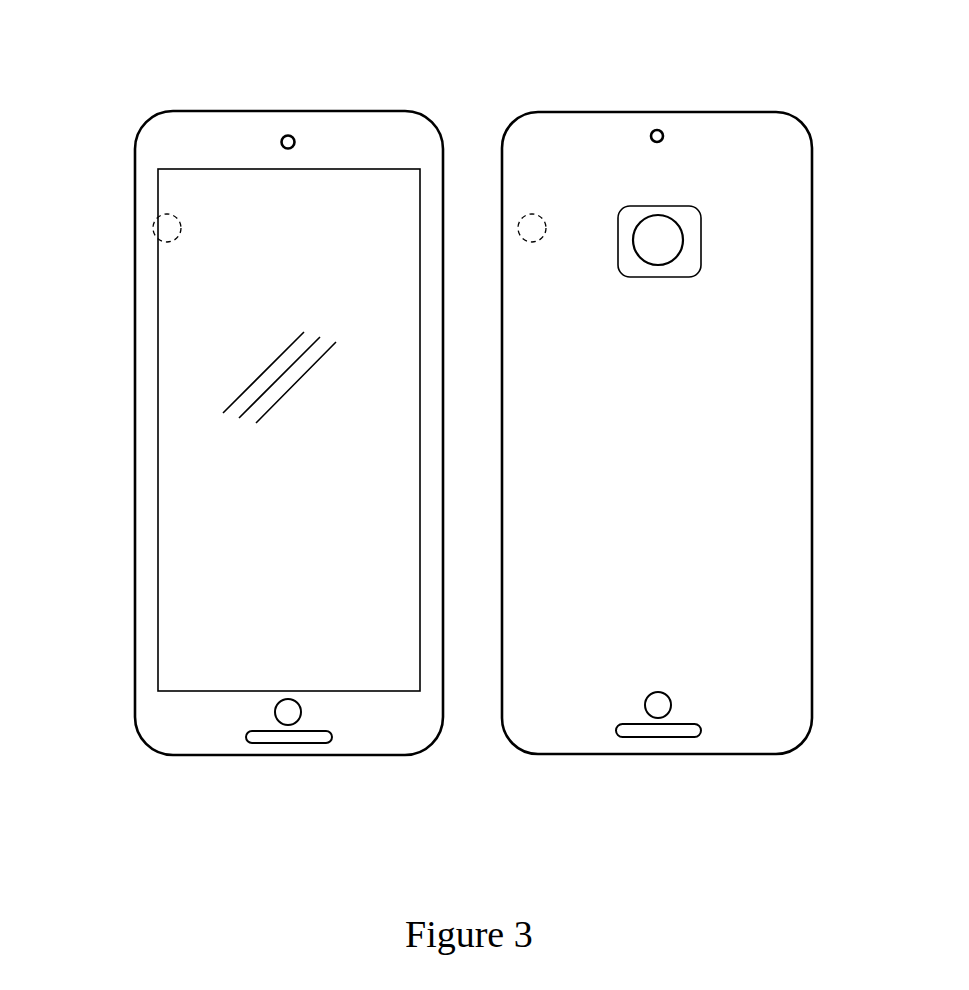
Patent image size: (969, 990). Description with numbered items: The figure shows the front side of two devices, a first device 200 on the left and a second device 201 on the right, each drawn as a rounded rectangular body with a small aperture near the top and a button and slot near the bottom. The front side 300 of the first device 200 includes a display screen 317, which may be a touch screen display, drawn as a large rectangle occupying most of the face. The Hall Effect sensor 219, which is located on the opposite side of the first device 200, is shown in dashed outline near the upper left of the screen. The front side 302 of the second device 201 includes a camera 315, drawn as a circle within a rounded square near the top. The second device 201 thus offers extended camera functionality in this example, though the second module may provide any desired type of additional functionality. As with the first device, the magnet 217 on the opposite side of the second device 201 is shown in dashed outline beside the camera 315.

The first device 200 is at (251, 479).
The second device 201 is at (687, 475).
The front side of the first device 300 is at (147, 559).
The front side of the second device 302 is at (783, 543).
The display screen 317 is at (180, 347).
The Hall Effect sensor 219 is at (152, 229).
The magnet 217 is at (547, 226).
The camera 315 is at (670, 240).